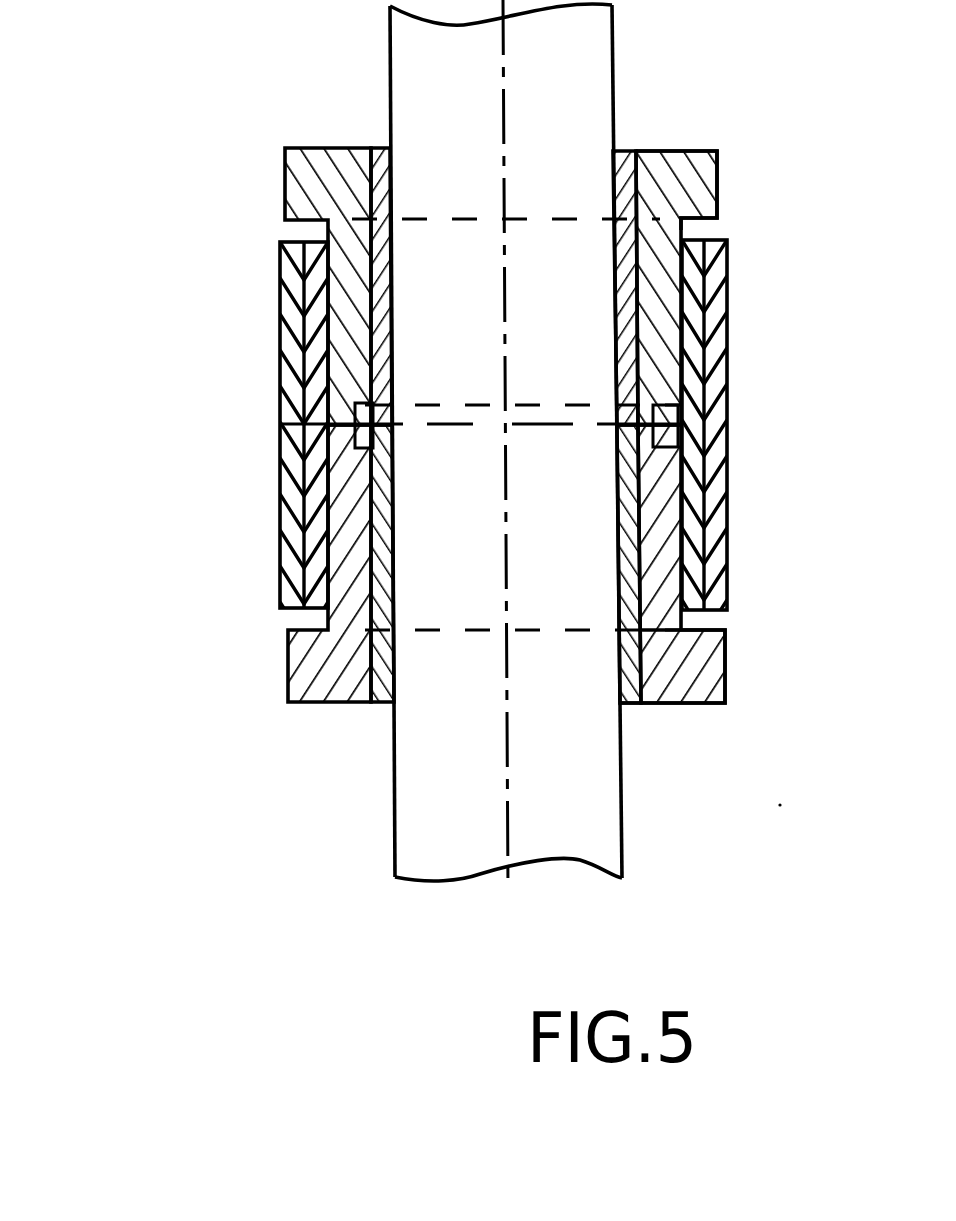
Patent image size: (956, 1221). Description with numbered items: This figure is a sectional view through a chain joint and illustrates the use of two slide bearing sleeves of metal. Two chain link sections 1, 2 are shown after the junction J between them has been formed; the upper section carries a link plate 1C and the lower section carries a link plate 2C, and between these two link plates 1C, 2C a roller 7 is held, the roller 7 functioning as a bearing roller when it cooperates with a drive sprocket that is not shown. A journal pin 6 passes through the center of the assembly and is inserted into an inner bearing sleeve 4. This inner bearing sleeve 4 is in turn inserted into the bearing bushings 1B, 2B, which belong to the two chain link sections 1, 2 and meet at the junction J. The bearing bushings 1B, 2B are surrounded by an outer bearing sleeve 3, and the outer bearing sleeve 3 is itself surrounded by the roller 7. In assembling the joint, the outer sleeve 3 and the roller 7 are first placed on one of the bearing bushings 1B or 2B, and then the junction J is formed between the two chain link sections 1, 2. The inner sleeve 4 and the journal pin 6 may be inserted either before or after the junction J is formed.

The chain link section 1 is at (447, 247).
The chain link section 2 is at (459, 594).
The bearing bushing 1B is at (650, 322).
The link plate 1C is at (690, 202).
The bearing bushing 2B is at (668, 585).
The link plate 2C is at (690, 681).
The outer bearing sleeve 3 is at (635, 402).
The inner bearing sleeve 4 is at (632, 158).
The journal pin 6 is at (577, 57).
The roller 7 is at (555, 440).
The junction J is at (370, 427).